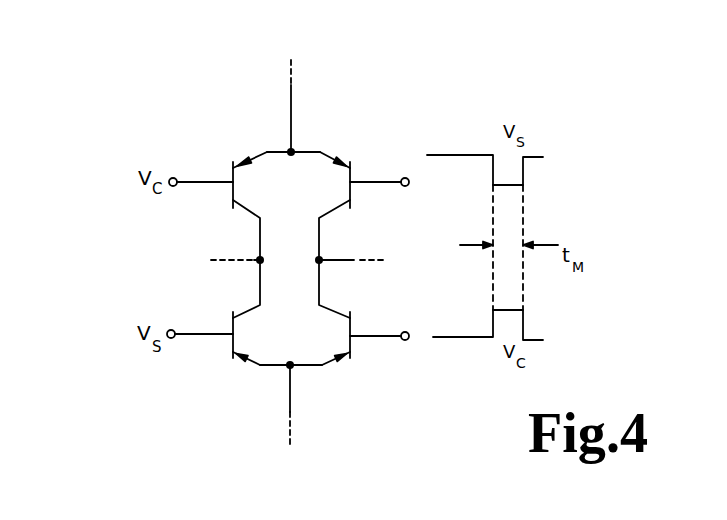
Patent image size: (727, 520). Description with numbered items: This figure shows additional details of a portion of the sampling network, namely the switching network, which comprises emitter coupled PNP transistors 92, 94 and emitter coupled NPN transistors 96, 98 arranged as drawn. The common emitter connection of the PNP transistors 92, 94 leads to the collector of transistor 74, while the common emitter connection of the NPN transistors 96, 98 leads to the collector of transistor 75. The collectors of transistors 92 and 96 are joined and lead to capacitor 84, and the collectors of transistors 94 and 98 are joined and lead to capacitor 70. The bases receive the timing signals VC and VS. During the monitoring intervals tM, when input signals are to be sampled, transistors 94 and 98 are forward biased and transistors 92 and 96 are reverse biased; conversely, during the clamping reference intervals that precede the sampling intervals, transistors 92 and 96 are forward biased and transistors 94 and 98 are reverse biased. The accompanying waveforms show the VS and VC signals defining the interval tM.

The PNP transistor 92 is at (264, 198).
The PNP transistor 94 is at (334, 198).
The NPN transistor 96 is at (264, 349).
The NPN transistor 98 is at (334, 349).
The transistor (collector connection) 74 is at (281, 83).
The transistor (collector connection) 75 is at (274, 437).
The capacitor (connection) 84 is at (184, 282).
The capacitor (connection) 70 is at (398, 286).